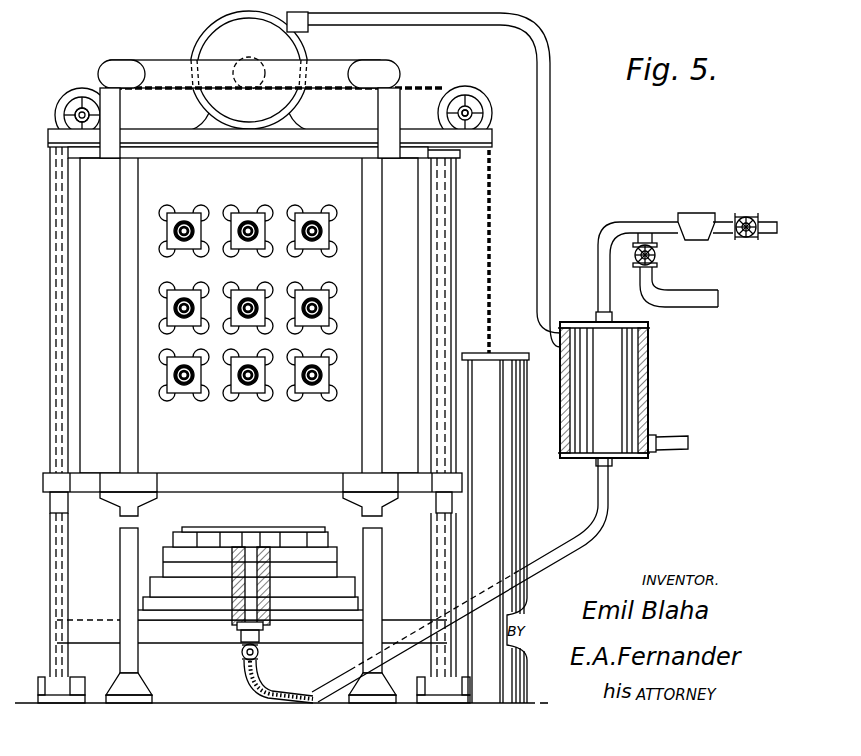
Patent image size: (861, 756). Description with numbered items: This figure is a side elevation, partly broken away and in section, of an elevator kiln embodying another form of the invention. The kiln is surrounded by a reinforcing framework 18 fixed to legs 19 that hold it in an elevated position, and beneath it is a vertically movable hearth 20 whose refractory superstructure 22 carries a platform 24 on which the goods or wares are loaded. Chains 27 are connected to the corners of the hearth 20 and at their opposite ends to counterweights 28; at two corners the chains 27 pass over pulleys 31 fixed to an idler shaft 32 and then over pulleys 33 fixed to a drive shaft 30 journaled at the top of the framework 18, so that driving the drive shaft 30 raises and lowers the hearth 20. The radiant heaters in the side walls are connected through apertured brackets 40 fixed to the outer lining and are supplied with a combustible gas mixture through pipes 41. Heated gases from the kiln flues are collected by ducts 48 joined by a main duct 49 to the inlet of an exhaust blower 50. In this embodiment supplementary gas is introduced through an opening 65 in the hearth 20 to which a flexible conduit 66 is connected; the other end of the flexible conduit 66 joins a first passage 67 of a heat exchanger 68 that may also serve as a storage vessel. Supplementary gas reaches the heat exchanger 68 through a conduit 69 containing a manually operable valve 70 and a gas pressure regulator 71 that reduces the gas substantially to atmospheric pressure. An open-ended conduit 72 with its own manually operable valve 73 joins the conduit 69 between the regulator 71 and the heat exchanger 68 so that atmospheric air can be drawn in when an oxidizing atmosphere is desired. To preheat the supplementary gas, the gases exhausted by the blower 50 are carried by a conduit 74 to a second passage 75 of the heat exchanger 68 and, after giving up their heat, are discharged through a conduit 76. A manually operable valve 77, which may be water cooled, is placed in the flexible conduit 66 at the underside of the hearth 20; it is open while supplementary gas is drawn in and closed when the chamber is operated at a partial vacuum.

The reinforcing framework 18 is at (68, 543).
The legs 19 is at (121, 535).
The hearth 20 is at (190, 644).
The refractory superstructure 22 is at (252, 576).
The platform 24 is at (296, 530).
The chains 27 is at (441, 86).
The counterweights 28 is at (495, 528).
The drive shaft 30 is at (470, 113).
The pulleys 31 is at (62, 102).
The idler shaft 32 is at (74, 116).
The pulleys 33 is at (480, 98).
The apertured brackets 40 is at (258, 226).
The pipes 41 is at (197, 231).
The ducts 48 is at (110, 63).
The main duct 49 is at (341, 62).
The exhaust blower 50 is at (205, 33).
The opening 65 is at (253, 538).
The flexible conduit 66 is at (327, 688).
The first passage 67 is at (608, 400).
The heat exchanger 68 is at (622, 459).
The conduit 69 is at (645, 211).
The manually operable valve 70 is at (750, 212).
The gas pressure regulator 71 is at (707, 201).
The open-ended conduit 72 is at (714, 292).
The manually operable valve 73 is at (656, 256).
The conduit 74 is at (545, 160).
The second passage 75 is at (641, 371).
The conduit 76 is at (689, 438).
The manually operable valve 77 is at (240, 658).